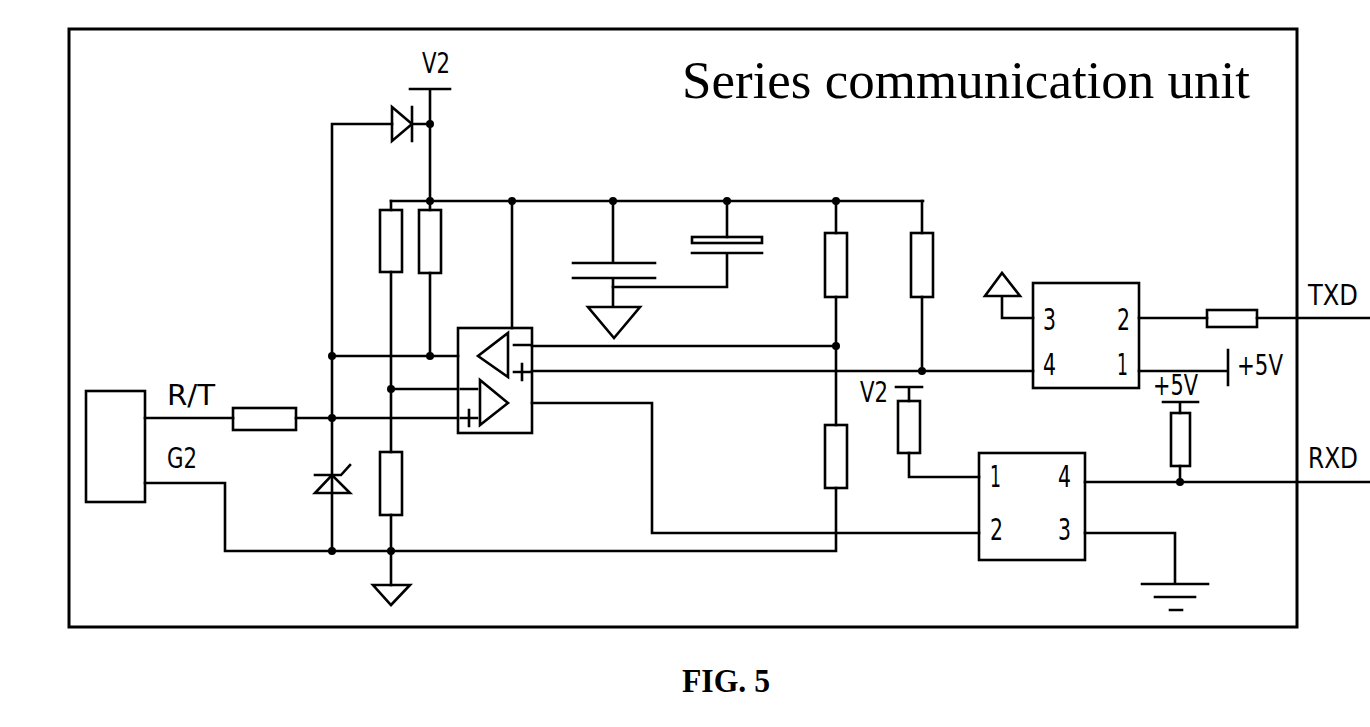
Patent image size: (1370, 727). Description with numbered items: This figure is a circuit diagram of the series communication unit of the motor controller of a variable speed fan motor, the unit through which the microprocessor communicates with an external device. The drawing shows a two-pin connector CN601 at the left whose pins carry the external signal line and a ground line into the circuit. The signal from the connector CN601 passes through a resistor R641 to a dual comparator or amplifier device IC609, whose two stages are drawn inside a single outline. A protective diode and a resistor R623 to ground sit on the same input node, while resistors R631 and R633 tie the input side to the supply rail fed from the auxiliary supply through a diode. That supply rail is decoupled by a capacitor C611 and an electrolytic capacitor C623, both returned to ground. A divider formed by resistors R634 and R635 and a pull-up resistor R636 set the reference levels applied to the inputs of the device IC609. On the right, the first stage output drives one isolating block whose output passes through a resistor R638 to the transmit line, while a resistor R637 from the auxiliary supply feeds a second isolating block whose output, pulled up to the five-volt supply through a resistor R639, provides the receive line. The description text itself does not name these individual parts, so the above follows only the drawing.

The resistor R631 is at (368, 326).
The resistor R633 is at (462, 278).
The resistor R623 is at (426, 518).
The resistor R641 is at (301, 398).
The resistor R634 is at (802, 313).
The resistor R635 is at (802, 456).
The resistor R636 is at (956, 286).
The resistor R637 is at (941, 432).
The resistor R638 is at (1254, 297).
The resistor R639 is at (1212, 442).
The capacitor C611 is at (595, 269).
The electrolytic capacitor C623 is at (717, 244).
The dual comparator / operational amplifier IC609 is at (537, 327).
The connector CN601 is at (126, 425).